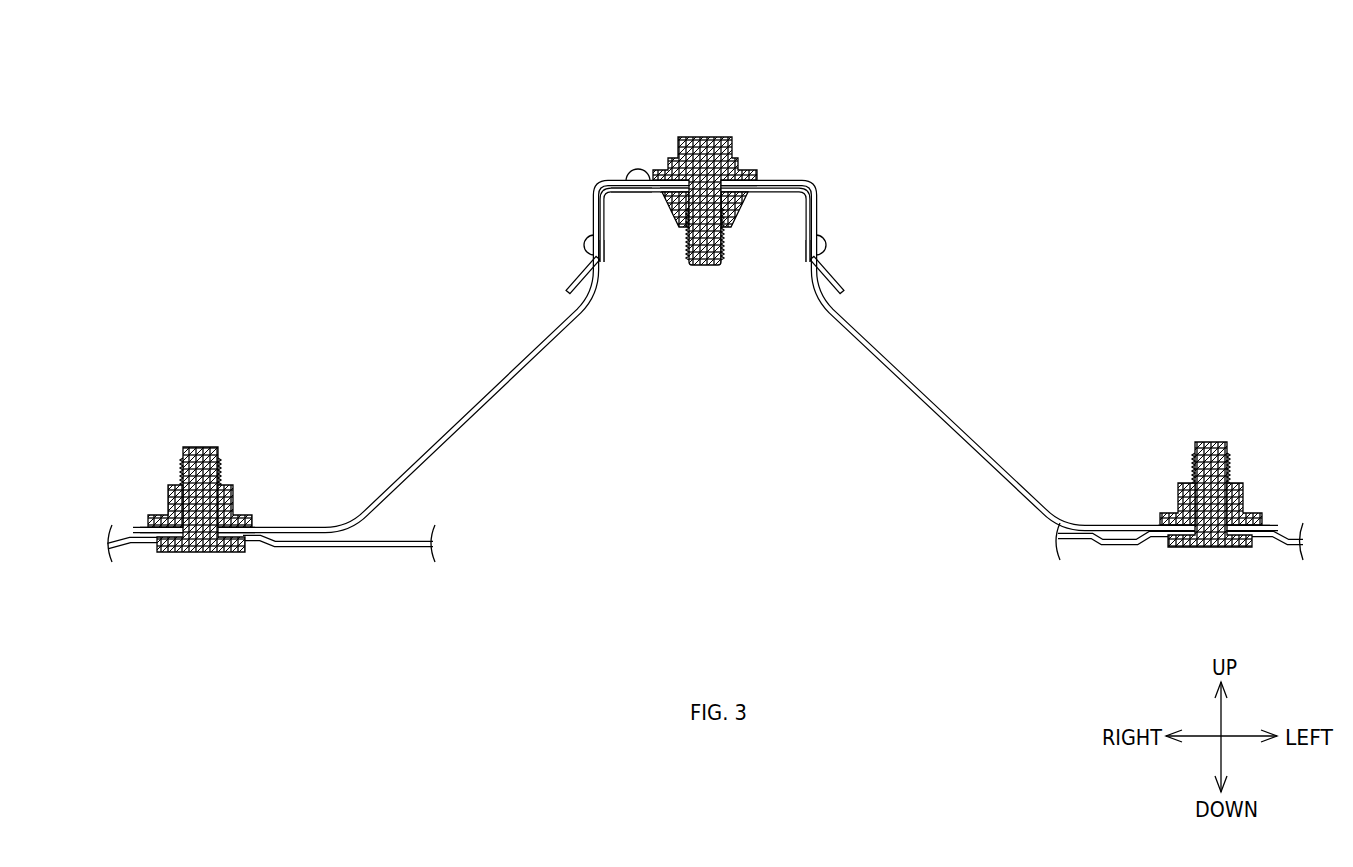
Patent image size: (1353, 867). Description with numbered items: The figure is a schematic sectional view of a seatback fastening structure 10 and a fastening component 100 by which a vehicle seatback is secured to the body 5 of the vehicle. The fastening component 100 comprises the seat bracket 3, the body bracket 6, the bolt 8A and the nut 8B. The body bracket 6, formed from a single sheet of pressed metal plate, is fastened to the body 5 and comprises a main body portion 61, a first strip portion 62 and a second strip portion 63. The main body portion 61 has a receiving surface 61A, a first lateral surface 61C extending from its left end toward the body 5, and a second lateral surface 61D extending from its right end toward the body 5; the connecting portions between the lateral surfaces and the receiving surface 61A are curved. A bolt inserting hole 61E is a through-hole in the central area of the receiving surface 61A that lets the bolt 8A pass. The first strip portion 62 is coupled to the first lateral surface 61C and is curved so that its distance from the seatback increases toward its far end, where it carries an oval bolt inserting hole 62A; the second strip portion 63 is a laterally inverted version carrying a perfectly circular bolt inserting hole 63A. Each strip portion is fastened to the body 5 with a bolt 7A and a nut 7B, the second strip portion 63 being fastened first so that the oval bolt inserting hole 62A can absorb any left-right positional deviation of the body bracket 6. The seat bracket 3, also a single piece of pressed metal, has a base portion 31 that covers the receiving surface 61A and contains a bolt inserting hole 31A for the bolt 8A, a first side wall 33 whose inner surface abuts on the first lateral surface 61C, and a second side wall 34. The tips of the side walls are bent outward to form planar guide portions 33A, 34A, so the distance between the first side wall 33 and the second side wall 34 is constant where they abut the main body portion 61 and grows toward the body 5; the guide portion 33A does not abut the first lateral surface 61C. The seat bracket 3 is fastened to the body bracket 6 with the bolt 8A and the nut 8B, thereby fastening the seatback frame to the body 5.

The seatback fastening structure 10 is at (405, 162).
The fastening component 100 is at (573, 145).
The seat bracket 3 is at (815, 160).
The base portion 31 is at (770, 180).
The bolt inserting hole 31A is at (733, 183).
The first side wall 33 is at (593, 205).
The second side wall 34 is at (817, 205).
The guide portion 33A is at (578, 280).
The guide portion 34A is at (842, 280).
The body 5 is at (345, 548).
The body bracket 6 is at (988, 380).
The main body portion 61 is at (773, 193).
The receiving surface 61A is at (640, 192).
The first lateral surface 61C is at (612, 268).
The second lateral surface 61D is at (800, 268).
The bolt inserting hole 61E is at (682, 230).
The first strip portion 62 is at (488, 408).
The bolt inserting hole 62A is at (180, 527).
The second strip portion 63 is at (923, 412).
The bolt inserting hole 63A is at (1187, 517).
The bolt 7A is at (212, 553).
The nut 7B is at (222, 488).
The bolt 8A is at (700, 140).
The nut 8B is at (742, 228).